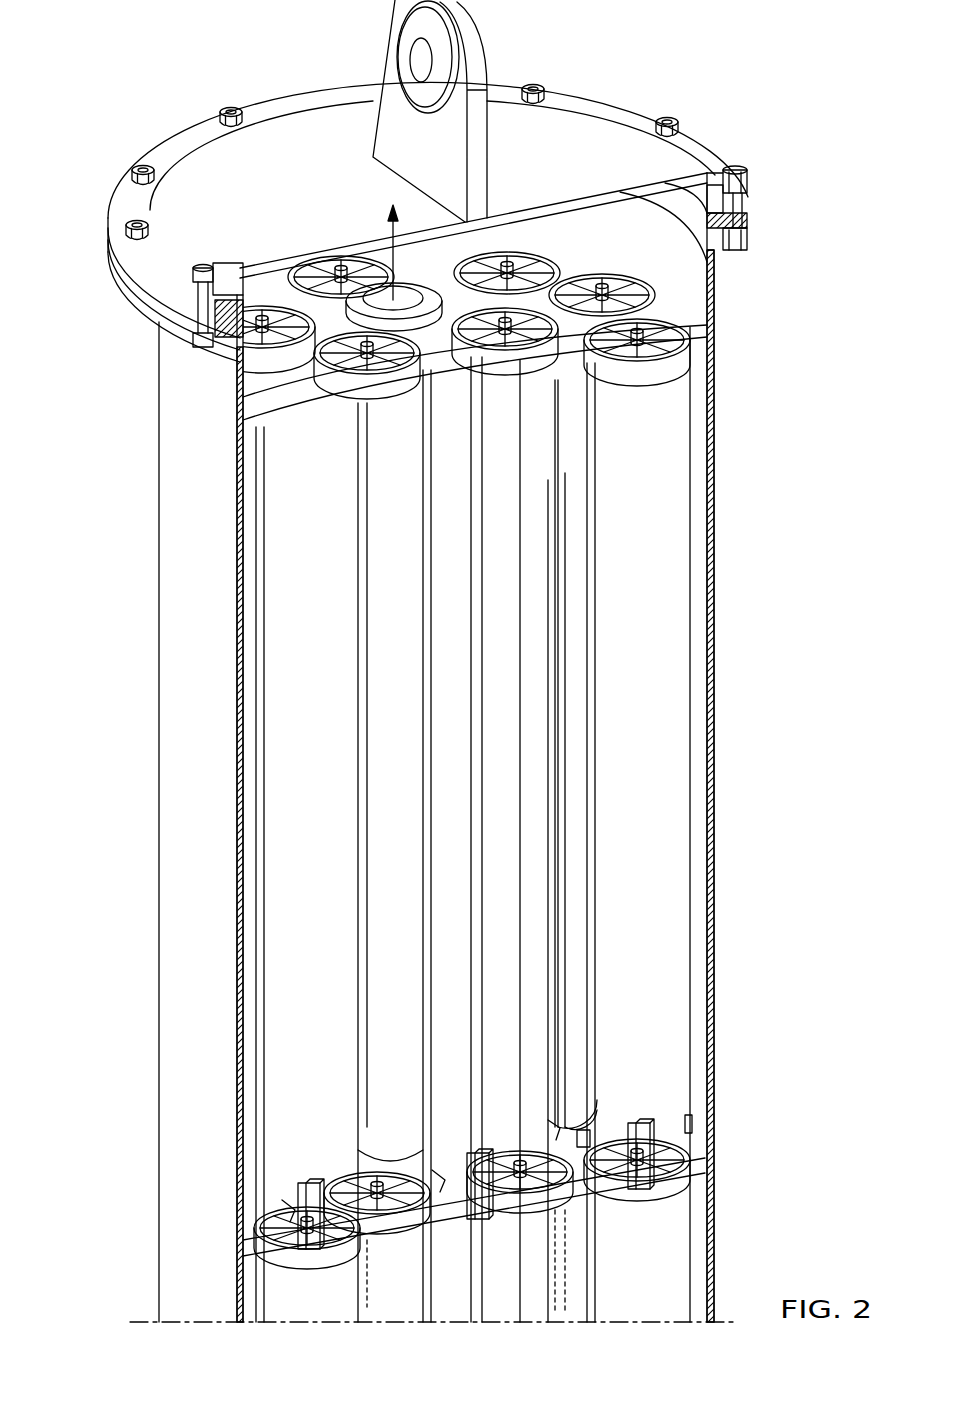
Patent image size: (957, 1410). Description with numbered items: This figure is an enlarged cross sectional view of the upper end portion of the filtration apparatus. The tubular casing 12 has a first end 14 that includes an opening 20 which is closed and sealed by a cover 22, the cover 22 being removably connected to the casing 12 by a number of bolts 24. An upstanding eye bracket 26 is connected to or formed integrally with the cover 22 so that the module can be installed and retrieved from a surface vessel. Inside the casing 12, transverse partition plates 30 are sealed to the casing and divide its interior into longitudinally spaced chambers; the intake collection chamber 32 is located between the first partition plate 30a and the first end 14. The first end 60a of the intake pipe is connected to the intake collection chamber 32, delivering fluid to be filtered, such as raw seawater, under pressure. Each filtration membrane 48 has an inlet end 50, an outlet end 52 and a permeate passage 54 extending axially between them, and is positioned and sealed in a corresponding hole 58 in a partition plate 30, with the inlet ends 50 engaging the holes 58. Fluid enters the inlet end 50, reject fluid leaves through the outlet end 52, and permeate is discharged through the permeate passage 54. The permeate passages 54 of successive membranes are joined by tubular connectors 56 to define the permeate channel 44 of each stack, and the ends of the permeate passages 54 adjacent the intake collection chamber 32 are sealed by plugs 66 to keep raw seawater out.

The tubular casing 12 is at (158, 737).
The first end 14 is at (760, 223).
The opening 20 is at (757, 190).
The cover 22 is at (603, 117).
The bolts 24 is at (220, 110).
The eye bracket 26 is at (476, 42).
The partition plate 30 is at (693, 1152).
The first partition plate 30a is at (697, 327).
The intake collection chamber 32 is at (693, 290).
The permeate channel 44 is at (487, 812).
The filtration membrane 48 is at (437, 637).
The inlet end 50 is at (410, 380).
The outlet end 52 is at (555, 1128).
The permeate passage 54 is at (483, 902).
The tubular connector 56 is at (290, 1207).
The hole 58 is at (598, 365).
The first end of intake pipe 60a is at (412, 285).
The plug 66 is at (593, 283).